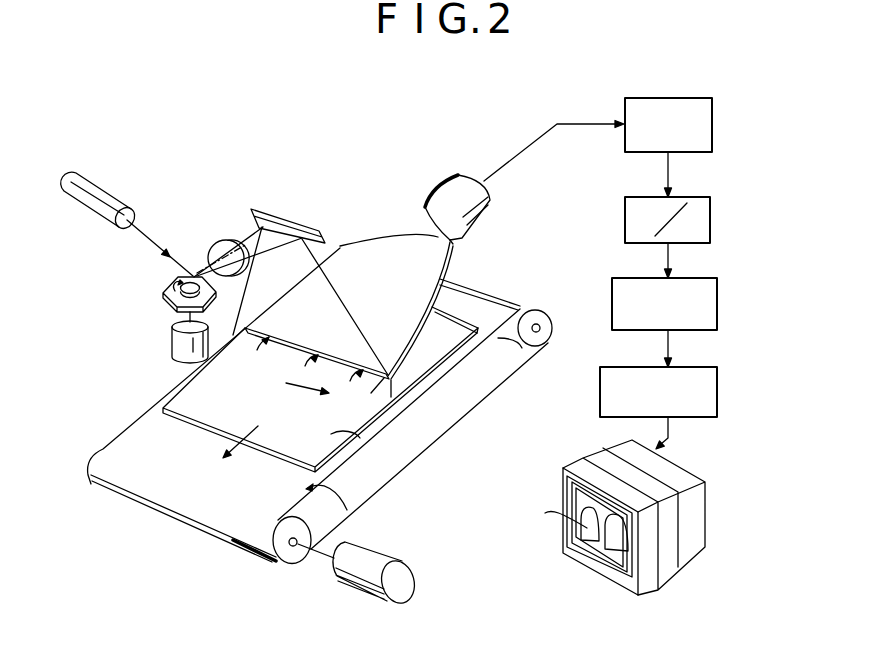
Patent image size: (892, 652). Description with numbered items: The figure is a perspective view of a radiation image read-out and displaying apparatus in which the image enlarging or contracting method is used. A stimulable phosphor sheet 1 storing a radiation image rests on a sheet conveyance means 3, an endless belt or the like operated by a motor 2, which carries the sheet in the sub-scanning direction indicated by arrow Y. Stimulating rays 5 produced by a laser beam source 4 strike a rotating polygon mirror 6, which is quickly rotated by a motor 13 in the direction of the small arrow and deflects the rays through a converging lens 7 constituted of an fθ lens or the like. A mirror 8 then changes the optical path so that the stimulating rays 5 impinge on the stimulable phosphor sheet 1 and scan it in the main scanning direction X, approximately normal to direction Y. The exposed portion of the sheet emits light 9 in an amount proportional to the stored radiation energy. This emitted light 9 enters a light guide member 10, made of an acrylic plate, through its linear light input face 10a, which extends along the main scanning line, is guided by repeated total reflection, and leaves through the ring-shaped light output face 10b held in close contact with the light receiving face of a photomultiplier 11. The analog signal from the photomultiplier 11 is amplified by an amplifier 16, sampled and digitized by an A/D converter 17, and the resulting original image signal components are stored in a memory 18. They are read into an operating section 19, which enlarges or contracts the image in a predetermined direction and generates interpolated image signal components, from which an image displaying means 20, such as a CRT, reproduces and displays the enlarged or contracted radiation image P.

The stimulable phosphor sheet 1 is at (370, 393).
The motor 2 is at (383, 572).
The sheet conveyance means 3 is at (352, 510).
The laser beam source 4 is at (118, 201).
The stimulating rays 5 is at (158, 248).
The rotating polygon mirror 6 is at (163, 292).
The converging lens 7 is at (227, 241).
The mirror 8 is at (323, 238).
The emitted light 9 is at (262, 349).
The light guide member 10 is at (378, 252).
The linear light input face 10a is at (390, 397).
The ring-shaped light output face 10b is at (452, 243).
The photomultiplier 11 is at (456, 174).
The motor 13 is at (172, 342).
The amplifier 16 is at (712, 130).
The A/D converter 17 is at (710, 220).
The memory 18 is at (717, 310).
The operating section 19 is at (717, 395).
The image displaying means 20 is at (697, 497).